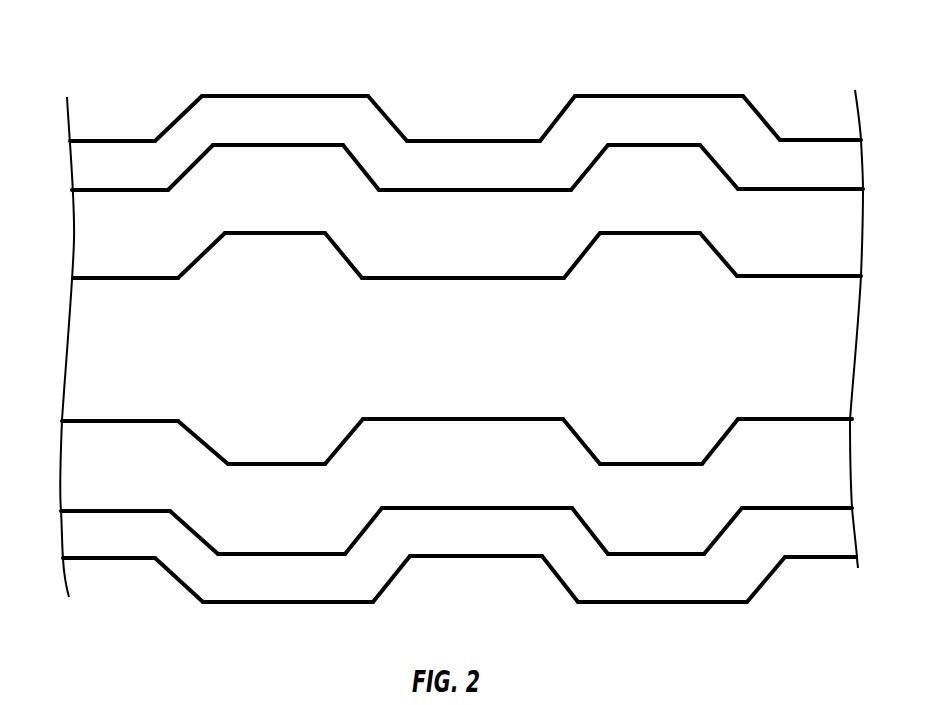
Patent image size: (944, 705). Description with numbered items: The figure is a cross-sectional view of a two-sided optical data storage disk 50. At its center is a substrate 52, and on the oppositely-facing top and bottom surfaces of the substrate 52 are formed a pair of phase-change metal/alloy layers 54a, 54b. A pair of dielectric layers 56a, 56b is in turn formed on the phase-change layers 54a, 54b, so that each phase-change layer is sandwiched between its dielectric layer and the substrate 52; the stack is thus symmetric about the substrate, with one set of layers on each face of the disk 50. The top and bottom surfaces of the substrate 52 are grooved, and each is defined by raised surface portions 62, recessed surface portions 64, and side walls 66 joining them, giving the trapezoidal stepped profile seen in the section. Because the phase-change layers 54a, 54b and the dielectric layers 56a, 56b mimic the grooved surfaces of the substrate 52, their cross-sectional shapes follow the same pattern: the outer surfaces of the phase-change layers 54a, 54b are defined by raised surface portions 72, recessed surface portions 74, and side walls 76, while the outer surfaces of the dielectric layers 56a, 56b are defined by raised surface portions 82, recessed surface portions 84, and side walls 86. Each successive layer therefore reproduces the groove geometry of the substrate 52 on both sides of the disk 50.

The two-sided optical data storage disk 50 is at (59, 43).
The substrate 52 is at (489, 359).
The phase-change metal/alloy layer 54a is at (500, 246).
The phase-change metal/alloy layer 54b is at (500, 478).
The dielectric layer 56a is at (500, 176).
The dielectric layer 56b is at (500, 546).
The raised surface portions 62 is at (455, 352).
The recessed surface portions 64 is at (461, 351).
The side walls 66 is at (460, 350).
The raised surface portions 72 is at (457, 351).
The recessed surface portions 74 is at (462, 349).
The side walls 76 is at (453, 349).
The raised surface portions 82 is at (474, 350).
The recessed surface portions 84 is at (452, 353).
The side walls 86 is at (471, 349).